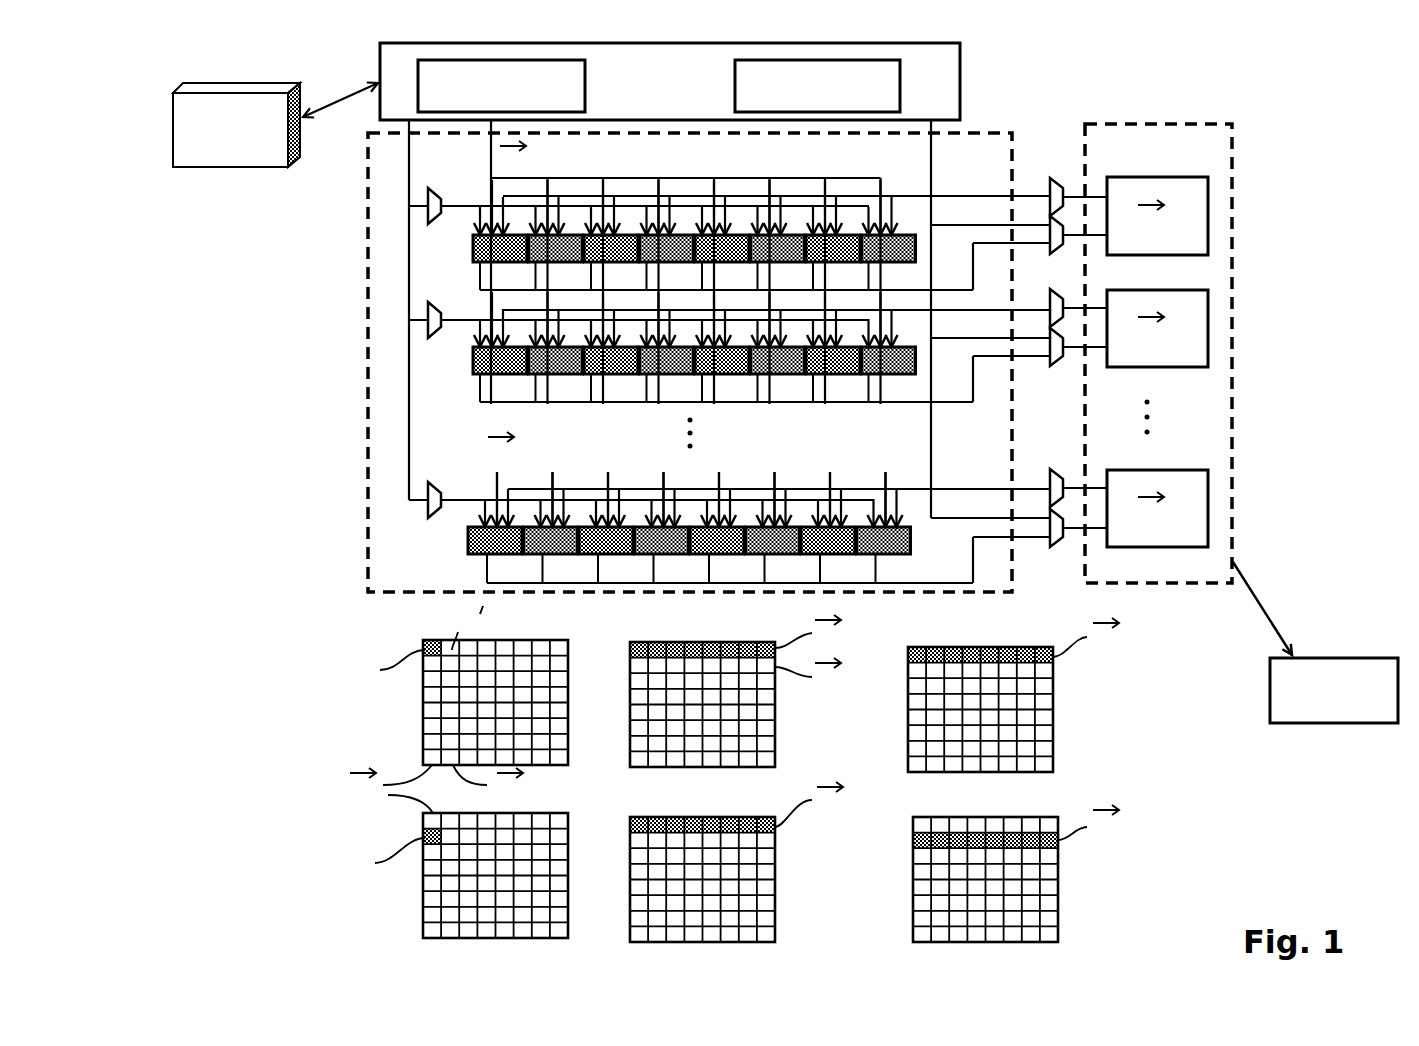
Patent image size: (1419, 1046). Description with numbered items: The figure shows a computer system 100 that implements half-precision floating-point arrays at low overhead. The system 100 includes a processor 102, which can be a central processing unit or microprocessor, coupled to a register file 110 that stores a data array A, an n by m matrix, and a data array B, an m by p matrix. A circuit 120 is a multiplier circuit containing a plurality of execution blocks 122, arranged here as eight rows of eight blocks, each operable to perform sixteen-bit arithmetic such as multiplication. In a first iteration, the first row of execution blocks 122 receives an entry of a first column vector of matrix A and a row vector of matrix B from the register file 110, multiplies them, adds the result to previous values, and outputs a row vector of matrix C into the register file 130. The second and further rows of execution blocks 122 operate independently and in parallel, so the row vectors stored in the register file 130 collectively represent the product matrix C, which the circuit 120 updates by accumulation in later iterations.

The system 100 is at (766, 492).
The processor 102 is at (207, 144).
The register file 110 is at (646, 99).
The circuit 120 is at (368, 543).
The execution block 122 is at (450, 254).
The register file 130 is at (1232, 173).